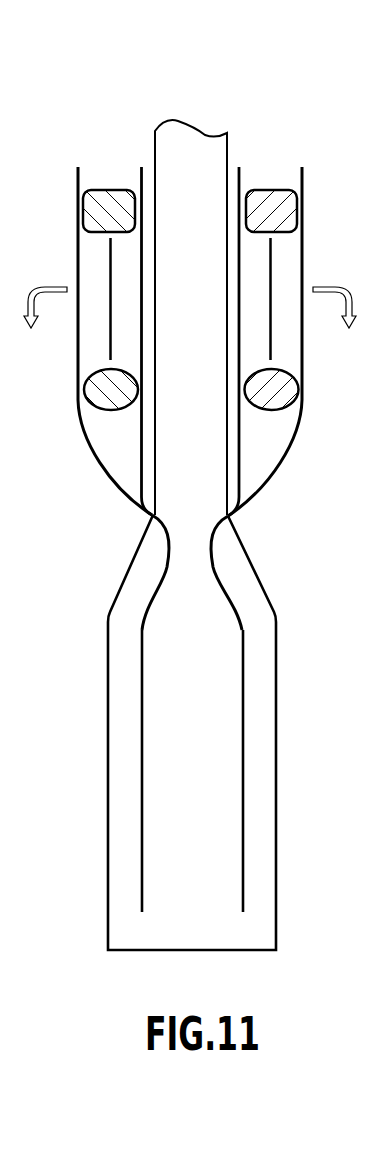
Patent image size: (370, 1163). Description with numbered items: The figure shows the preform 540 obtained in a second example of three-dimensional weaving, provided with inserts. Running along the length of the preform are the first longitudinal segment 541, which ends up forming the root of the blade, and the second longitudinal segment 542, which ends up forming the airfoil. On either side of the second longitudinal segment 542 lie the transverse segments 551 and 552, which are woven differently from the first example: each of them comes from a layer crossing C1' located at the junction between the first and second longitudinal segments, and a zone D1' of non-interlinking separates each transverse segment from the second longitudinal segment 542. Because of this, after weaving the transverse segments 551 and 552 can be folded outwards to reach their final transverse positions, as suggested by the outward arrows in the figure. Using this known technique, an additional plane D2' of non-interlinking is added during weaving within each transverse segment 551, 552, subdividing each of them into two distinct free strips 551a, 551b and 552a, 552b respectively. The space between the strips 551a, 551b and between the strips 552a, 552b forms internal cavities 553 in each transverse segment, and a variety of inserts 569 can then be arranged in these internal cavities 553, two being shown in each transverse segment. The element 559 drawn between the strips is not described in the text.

The preform 540 is at (237, 76).
The first longitudinal segment 541 is at (208, 851).
The second longitudinal segment 542 is at (207, 175).
The transverse segment 551 is at (273, 157).
The free strip 551a is at (304, 226).
The free strip 551b is at (240, 273).
The transverse segment 552 is at (107, 157).
The free strip 552a is at (76, 226).
The free strip 552b is at (141, 312).
The internal cavity 553 is at (97, 333).
The pull wire 559 is at (110, 265).
The insert 569 is at (98, 206).
The zone of non-interlinking D1' is at (191, 150).
The additional plane of non-interlinking D2' is at (190, 150).
The layer crossing C1' is at (188, 535).